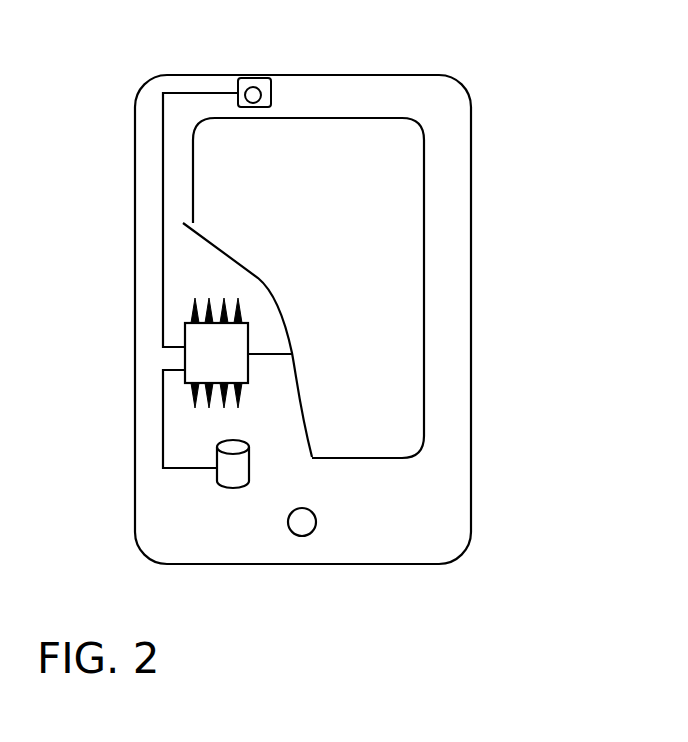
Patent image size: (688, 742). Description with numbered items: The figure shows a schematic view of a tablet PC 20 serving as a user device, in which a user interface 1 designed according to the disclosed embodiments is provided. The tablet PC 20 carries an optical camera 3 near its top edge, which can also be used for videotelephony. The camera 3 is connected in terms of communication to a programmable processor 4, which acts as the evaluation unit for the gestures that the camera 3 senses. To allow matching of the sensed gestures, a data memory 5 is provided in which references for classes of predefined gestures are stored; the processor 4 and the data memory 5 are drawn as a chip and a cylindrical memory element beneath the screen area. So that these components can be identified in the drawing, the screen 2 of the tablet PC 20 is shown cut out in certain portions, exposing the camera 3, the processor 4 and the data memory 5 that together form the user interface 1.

The user interface 1 is at (140, 61).
The screen 2 is at (367, 118).
The optical camera 3 is at (265, 80).
The programmable processor 4 is at (185, 338).
The data memory 5 is at (232, 488).
The tablet PC 20 is at (463, 88).